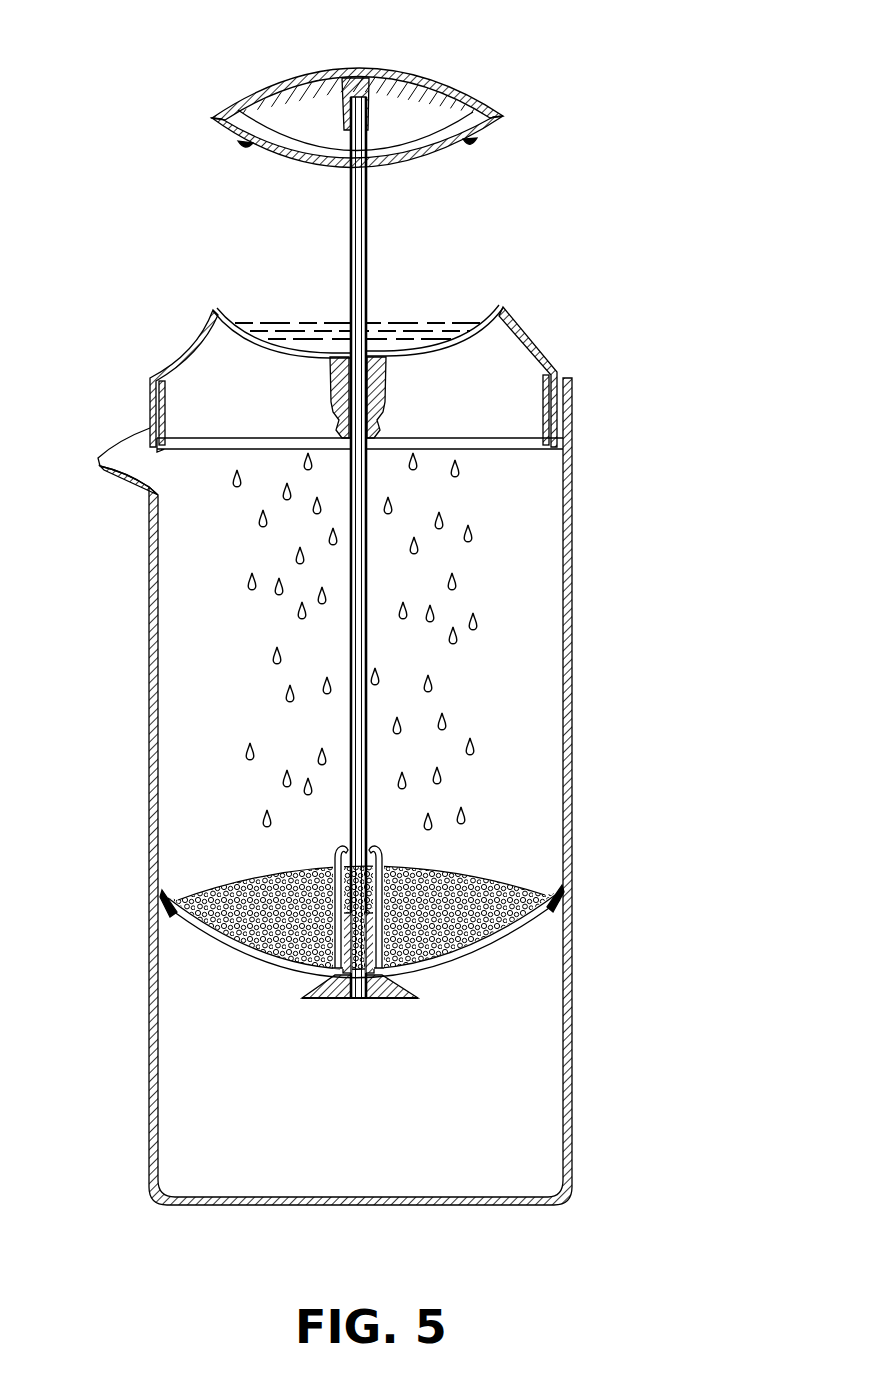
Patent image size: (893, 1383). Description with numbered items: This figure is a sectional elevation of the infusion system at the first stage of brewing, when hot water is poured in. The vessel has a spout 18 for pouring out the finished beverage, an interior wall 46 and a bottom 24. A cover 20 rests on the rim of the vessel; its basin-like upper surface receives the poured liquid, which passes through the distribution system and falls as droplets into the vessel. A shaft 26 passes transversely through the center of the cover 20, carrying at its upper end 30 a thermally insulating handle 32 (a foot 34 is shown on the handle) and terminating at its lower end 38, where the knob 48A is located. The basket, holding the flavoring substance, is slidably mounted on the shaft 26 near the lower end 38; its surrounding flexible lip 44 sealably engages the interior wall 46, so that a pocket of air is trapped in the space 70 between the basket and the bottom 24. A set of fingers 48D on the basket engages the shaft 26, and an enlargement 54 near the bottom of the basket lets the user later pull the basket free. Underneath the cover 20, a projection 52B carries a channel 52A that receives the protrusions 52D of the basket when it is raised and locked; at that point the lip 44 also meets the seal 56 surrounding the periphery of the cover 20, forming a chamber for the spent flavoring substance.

The spout 18 is at (130, 450).
The cover 20 is at (502, 374).
The bottom 24 is at (473, 1195).
The shaft 26 is at (350, 237).
The end 30 is at (359, 96).
The handle 32 is at (449, 76).
The knob foot 34 is at (470, 150).
The end 38 is at (362, 1002).
The lip 44 is at (167, 903).
The interior wall 46 is at (162, 713).
The knob 48A is at (345, 1002).
The fingers 48D is at (335, 873).
The channel 52A is at (382, 408).
The projection 52B is at (377, 388).
The protrusions 52D is at (377, 845).
The enlargement 54 is at (322, 1004).
The seal 56 is at (517, 451).
The space 70 is at (230, 1169).